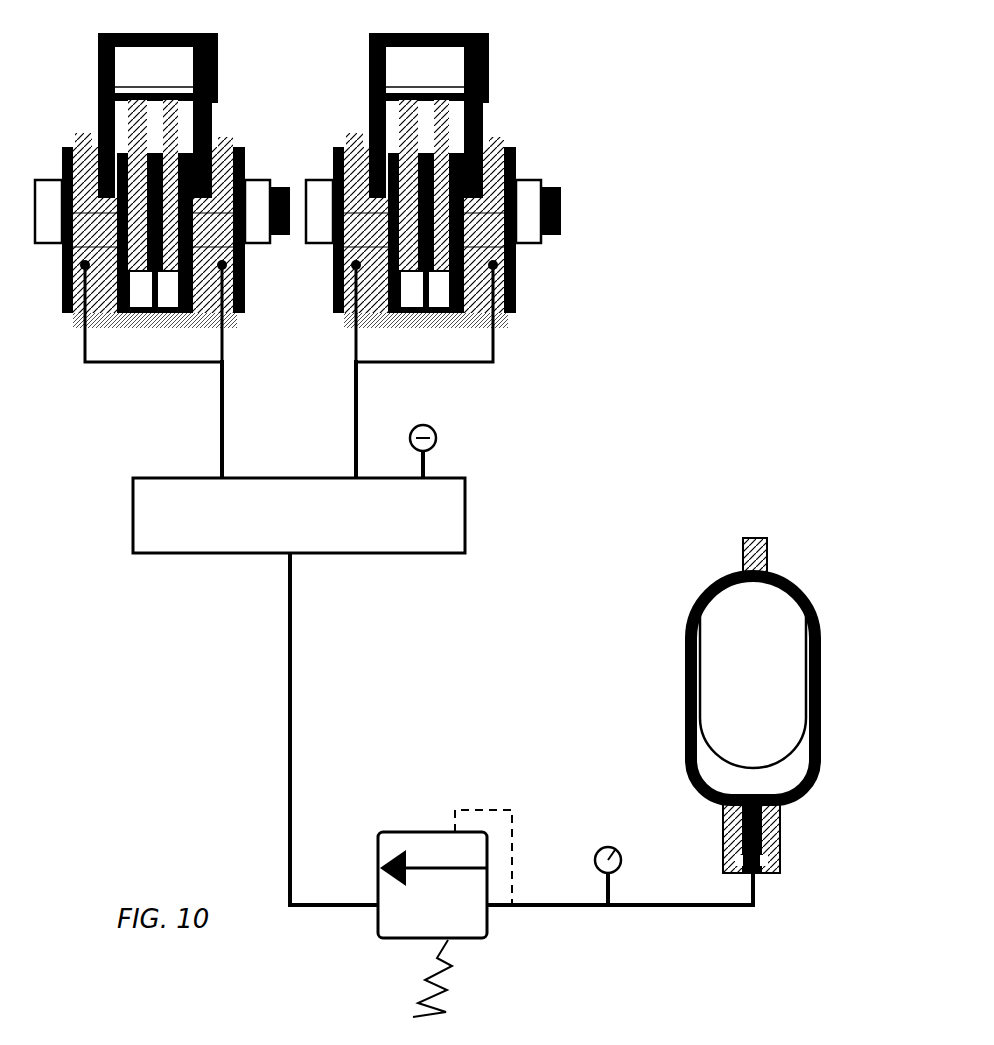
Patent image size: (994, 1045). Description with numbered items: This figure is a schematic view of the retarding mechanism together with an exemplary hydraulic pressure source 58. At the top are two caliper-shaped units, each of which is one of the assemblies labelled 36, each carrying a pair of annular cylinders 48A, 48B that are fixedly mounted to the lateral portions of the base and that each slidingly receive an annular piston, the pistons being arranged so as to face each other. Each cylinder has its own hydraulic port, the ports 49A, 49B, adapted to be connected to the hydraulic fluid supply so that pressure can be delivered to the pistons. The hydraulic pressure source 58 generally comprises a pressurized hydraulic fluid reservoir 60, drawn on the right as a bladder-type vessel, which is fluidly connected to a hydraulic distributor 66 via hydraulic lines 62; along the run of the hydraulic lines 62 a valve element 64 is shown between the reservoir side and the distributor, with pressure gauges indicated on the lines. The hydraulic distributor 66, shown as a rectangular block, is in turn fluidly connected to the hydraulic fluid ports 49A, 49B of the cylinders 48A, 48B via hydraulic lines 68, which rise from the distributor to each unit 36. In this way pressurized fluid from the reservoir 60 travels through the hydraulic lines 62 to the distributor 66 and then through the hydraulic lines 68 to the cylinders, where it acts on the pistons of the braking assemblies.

The hydraulic tool / clamp 36 is at (244, 132).
The annular cylinder 48A is at (72, 262).
The annular cylinder 48B is at (226, 285).
The hydraulic port 49A is at (85, 268).
The hydraulic port 49B is at (213, 270).
The hydraulic pressure source 58 is at (600, 618).
The pressurized hydraulic fluid reservoir 60 is at (685, 660).
The hydraulic lines 62 is at (292, 748).
The check valve 64 is at (487, 938).
The hydraulic distributor 66 is at (465, 530).
The hydraulic lines 68 is at (355, 452).